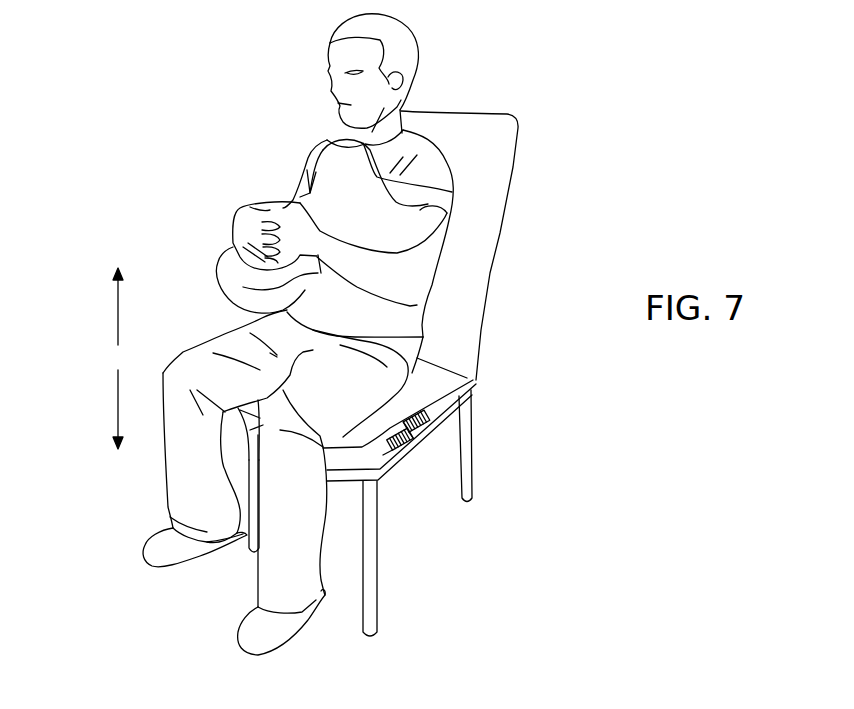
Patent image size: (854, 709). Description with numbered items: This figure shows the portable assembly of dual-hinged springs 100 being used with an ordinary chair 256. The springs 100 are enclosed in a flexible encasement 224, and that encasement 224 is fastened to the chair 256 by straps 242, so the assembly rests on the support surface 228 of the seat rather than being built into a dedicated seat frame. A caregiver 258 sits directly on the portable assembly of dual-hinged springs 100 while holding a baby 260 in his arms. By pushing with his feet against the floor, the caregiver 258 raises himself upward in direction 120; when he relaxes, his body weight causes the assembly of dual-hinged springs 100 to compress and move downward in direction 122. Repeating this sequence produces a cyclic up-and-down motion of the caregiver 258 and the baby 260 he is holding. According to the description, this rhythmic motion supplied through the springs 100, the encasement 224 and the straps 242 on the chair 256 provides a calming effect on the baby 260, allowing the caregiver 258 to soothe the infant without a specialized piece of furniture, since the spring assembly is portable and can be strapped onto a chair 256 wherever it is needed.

The dual-hinged springs 100 is at (427, 402).
The direction 120 is at (118, 300).
The direction 122 is at (118, 390).
The flexible encasement 224 is at (483, 327).
The support surface 228 is at (415, 435).
The straps 242 is at (433, 427).
The chair 256 is at (422, 373).
The caregiver 258 is at (410, 22).
The baby 260 is at (323, 148).